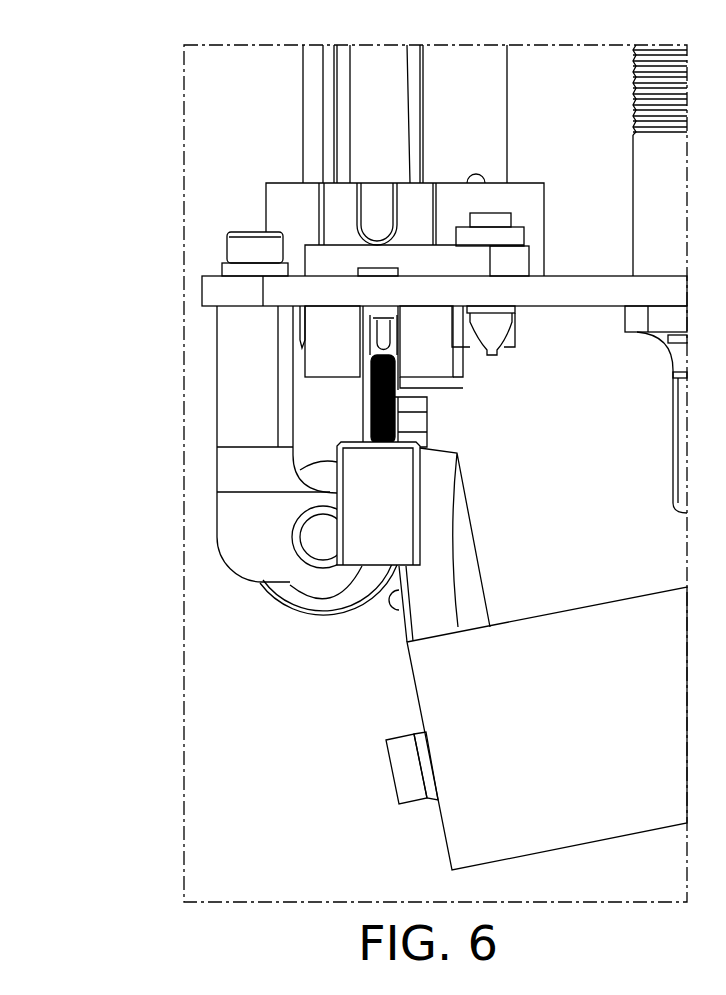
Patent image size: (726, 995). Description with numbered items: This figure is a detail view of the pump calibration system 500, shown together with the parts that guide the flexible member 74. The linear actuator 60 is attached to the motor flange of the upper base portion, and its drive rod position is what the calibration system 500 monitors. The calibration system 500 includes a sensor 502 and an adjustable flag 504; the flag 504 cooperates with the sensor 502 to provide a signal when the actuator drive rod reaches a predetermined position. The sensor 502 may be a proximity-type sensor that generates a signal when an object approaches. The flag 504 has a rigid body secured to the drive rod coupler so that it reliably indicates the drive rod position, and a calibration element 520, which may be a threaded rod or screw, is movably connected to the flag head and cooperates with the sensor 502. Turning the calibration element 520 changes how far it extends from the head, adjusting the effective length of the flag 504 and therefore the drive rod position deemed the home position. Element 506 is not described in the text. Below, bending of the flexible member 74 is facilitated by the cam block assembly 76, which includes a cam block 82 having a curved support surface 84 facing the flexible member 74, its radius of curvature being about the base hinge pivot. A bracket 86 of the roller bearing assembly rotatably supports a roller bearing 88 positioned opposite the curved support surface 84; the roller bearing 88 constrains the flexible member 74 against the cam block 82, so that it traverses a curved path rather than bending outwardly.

The linear actuator 60 is at (491, 136).
The calibration system 500 is at (508, 405).
The sensor 502 is at (443, 363).
The adjustable flag 504 is at (398, 468).
The clamp plate 506 is at (390, 507).
The calibration element 520 is at (368, 407).
The cam block 82 is at (433, 527).
The curved support surface 84 is at (410, 605).
The bracket 86 is at (217, 505).
The roller bearing 88 is at (290, 612).
The flexible member 74 is at (400, 615).
The cam block assembly 76 is at (428, 693).